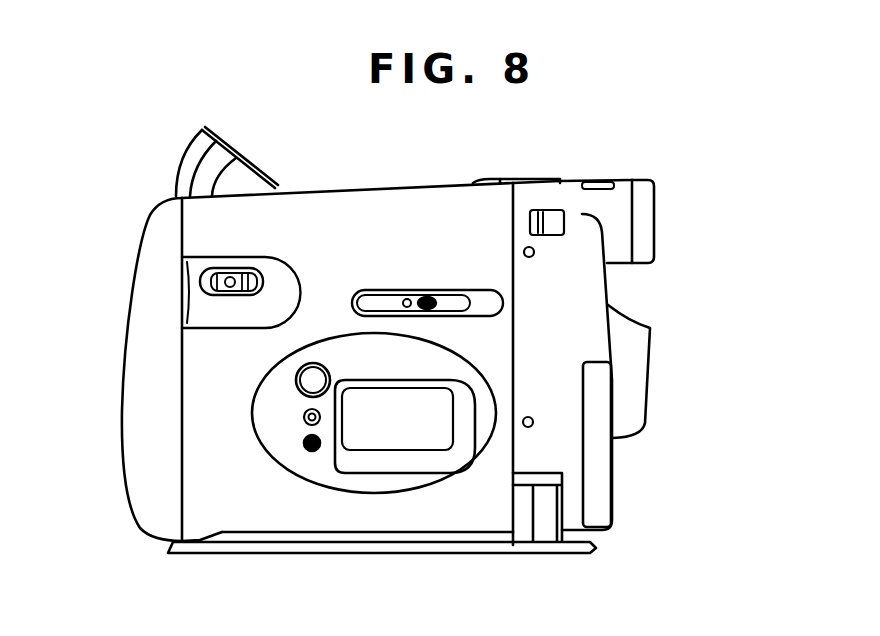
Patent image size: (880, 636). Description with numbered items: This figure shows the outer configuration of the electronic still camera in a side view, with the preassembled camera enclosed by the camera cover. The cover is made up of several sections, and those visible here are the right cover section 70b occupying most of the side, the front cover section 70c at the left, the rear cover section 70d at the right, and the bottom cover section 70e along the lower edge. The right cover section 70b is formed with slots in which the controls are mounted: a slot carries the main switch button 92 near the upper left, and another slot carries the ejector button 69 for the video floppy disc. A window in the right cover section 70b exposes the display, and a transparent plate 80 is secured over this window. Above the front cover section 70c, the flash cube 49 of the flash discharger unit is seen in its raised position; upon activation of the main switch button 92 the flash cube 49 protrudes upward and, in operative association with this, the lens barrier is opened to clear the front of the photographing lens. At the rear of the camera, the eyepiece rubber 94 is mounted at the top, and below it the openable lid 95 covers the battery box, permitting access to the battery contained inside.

The flash cube 49 is at (200, 178).
The main switch button 92 is at (203, 283).
The front cover section 70c is at (148, 425).
The right cover section 70b is at (370, 212).
The ejector button 69 is at (388, 298).
The eyepiece rubber 94 is at (638, 206).
The rear cover section 70d is at (573, 305).
The openable lid 95 is at (597, 480).
The transparent plate 80 is at (422, 427).
The bottom cover section 70e is at (293, 545).